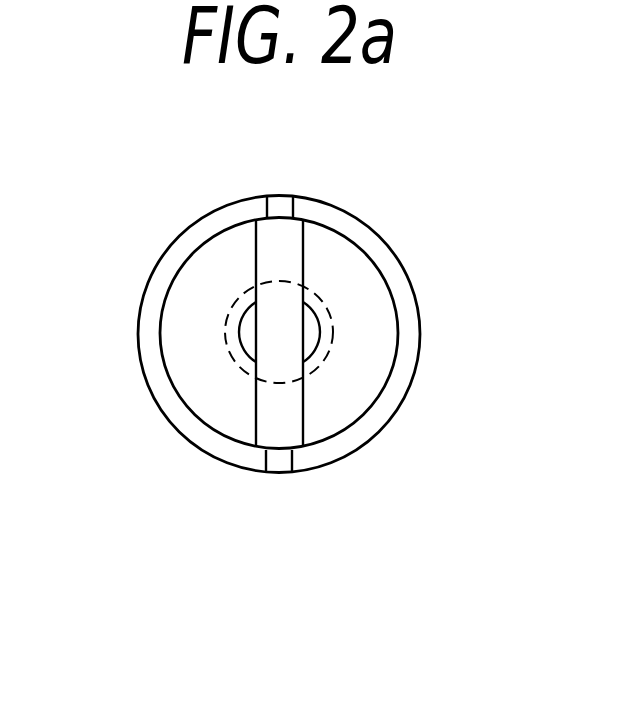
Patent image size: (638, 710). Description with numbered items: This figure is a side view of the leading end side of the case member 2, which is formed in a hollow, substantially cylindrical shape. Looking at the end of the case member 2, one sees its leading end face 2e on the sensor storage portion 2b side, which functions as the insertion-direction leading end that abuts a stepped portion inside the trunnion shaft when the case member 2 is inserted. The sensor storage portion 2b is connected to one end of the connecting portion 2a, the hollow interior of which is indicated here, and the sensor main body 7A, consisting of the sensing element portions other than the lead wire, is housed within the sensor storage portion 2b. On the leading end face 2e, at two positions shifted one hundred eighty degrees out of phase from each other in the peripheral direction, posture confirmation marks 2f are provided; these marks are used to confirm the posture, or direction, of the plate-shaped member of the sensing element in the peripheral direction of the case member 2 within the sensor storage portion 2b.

The case member 2 is at (97, 322).
The connecting portion 2a is at (323, 297).
The sensor storage portion 2b is at (188, 378).
The leading end face 2e is at (405, 372).
The posture confirmation marks 2f is at (283, 200).
The sensor main body 7A is at (287, 390).